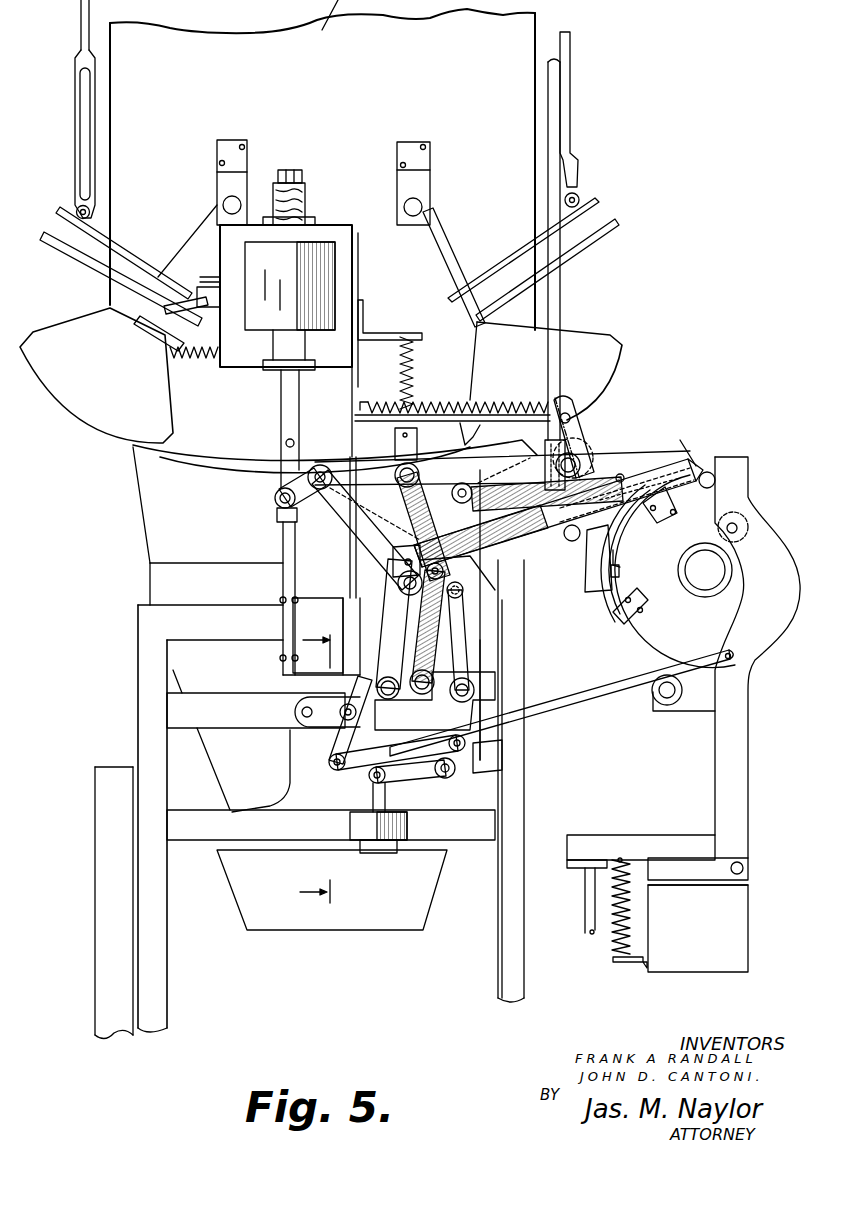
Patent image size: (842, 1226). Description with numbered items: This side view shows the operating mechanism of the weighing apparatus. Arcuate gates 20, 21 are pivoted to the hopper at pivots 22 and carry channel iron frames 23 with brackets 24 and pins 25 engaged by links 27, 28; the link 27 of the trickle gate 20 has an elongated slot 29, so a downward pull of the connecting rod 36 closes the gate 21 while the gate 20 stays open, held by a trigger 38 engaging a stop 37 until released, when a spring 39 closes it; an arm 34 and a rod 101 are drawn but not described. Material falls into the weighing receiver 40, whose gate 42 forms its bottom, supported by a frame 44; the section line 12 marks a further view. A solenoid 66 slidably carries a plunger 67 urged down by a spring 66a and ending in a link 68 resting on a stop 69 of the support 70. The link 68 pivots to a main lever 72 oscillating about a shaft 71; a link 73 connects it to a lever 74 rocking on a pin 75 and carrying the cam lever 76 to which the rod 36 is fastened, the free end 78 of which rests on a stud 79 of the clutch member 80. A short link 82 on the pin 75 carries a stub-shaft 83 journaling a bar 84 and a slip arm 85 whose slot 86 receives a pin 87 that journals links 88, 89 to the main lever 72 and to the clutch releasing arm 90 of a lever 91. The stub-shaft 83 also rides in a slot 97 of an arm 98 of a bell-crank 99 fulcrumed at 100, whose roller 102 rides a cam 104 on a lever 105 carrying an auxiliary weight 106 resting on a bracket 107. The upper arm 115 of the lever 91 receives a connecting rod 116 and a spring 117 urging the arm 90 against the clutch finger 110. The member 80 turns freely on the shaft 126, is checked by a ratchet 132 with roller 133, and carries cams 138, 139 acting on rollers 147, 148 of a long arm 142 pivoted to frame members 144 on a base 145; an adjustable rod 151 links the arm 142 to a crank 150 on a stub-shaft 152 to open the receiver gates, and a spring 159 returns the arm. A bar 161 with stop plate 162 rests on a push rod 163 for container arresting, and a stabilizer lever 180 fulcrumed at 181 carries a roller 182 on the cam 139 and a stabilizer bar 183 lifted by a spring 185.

The section line 12 is at (314, 768).
The arcuate gate 20 is at (65, 384).
The arcuate gate 21 is at (610, 342).
The pivot 22 is at (227, 202).
The channel iron frame 23 is at (90, 260).
The bracket 24 is at (90, 218).
The pin 25 is at (78, 210).
The link 27 is at (85, 38).
The link 28 is at (570, 68).
The elongated slot 29 is at (83, 120).
The lever 34 is at (168, 333).
The connecting rod 36 is at (557, 287).
The stop 37 is at (186, 315).
The trigger 38 is at (208, 283).
The spring 39 is at (212, 362).
The weighing receiver 40 is at (222, 776).
The arcuate gate 42 is at (290, 768).
The frame 44 is at (150, 686).
The solenoid 66 is at (335, 272).
The spring 66a is at (308, 195).
The plunger 67 is at (281, 386).
The link 68 is at (280, 470).
The stop 69 is at (276, 505).
The operating mechanism support 70 is at (283, 540).
The shaft 71 is at (585, 458).
The main lever 72 is at (499, 495).
The link 73 is at (367, 532).
The lever 74 is at (394, 624).
The pin 75 is at (382, 678).
The cam lever 76 is at (558, 513).
The free end 78 is at (684, 445).
The stud 79 is at (708, 470).
The clutch member 80 is at (765, 520).
The short link 82 is at (412, 694).
The stub-shaft 83 is at (422, 690).
The bar 84 is at (400, 596).
The slip arm 85 is at (445, 612).
The elongated slot 86 is at (463, 598).
The pin 87 is at (500, 600).
The link 88 is at (425, 520).
The link 89 is at (530, 563).
The clutch releasing arm 90 is at (620, 552).
The lever 91 is at (585, 462).
The slot 97 is at (460, 678).
The arm 98 is at (484, 660).
The bell-crank 99 is at (490, 672).
The fulcrum 100 is at (478, 688).
The rod 101 is at (520, 713).
The roller 102 is at (450, 748).
The cam 104 is at (505, 755).
The lever 105 is at (430, 775).
The auxiliary weight 106 is at (408, 826).
The bracket 107 is at (385, 853).
The clutch finger 110 is at (620, 571).
The upper arm 115 is at (582, 432).
The connecting rod 116 is at (470, 430).
The spring 117 is at (442, 402).
The shaft 126 is at (700, 590).
The ratchet 132 is at (640, 470).
The roller 133 is at (680, 490).
The cam 138 is at (622, 624).
The cam 139 is at (600, 585).
The long arm 142 is at (748, 748).
The frame member 144 is at (750, 866).
The base 145 is at (745, 945).
The roller 147 is at (749, 538).
The roller 148 is at (662, 708).
The crank 150 is at (338, 740).
The adjustable connecting rod 151 is at (609, 698).
The stub-shaft 152 is at (343, 708).
The spring 159 is at (612, 950).
The bar 161 is at (628, 845).
The stop plate 162 is at (570, 868).
The push rod 163 is at (585, 918).
The lever 180 is at (500, 500).
The fulcrum 181 is at (463, 503).
The roller 182 is at (637, 470).
The stabilizer bar 183 is at (395, 445).
The spring 185 is at (400, 360).